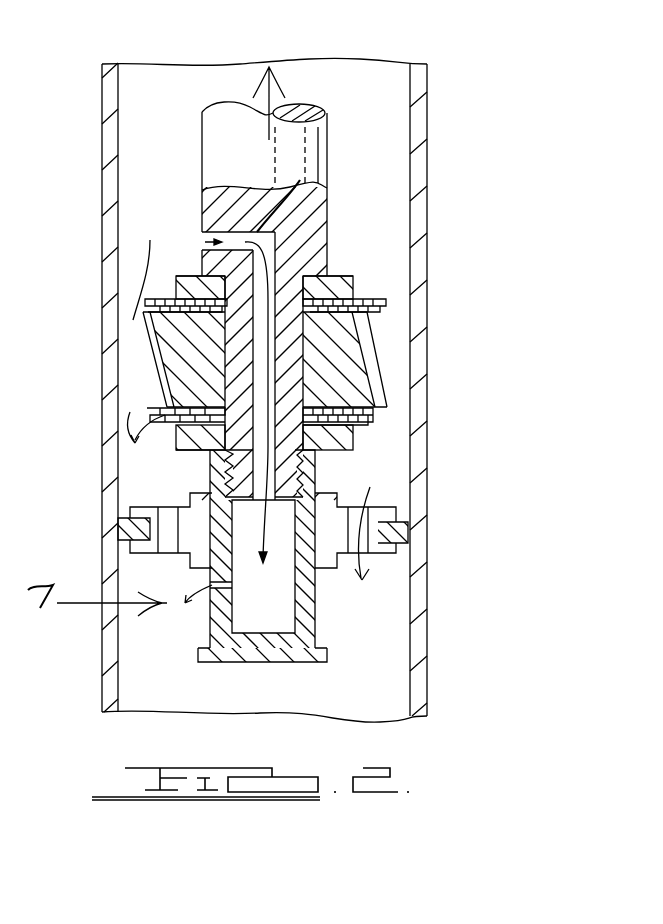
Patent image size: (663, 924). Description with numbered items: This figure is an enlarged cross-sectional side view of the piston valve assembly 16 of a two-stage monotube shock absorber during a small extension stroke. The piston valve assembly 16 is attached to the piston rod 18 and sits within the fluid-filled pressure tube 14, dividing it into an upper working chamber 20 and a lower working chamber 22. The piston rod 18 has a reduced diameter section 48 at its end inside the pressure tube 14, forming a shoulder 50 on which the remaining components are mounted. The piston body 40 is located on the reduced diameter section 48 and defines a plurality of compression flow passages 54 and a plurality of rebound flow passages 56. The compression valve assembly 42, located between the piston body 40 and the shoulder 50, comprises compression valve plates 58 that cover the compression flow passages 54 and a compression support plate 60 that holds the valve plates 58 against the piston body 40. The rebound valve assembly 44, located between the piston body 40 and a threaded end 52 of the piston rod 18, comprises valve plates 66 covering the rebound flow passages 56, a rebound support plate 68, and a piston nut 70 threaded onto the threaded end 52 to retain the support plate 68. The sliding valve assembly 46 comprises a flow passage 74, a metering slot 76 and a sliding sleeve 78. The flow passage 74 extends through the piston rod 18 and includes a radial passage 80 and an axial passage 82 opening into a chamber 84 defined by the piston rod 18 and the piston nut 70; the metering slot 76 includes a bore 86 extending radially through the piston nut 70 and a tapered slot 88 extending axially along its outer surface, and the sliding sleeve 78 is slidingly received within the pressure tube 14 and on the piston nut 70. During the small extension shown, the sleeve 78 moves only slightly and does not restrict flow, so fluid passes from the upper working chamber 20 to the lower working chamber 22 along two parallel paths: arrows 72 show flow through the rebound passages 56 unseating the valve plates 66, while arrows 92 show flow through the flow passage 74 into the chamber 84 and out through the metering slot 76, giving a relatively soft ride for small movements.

The pressure tube 14 is at (426, 112).
The piston valve assembly 16 is at (362, 84).
The piston rod 18 is at (213, 171).
The upper working chamber 20 is at (134, 120).
The lower working chamber 22 is at (249, 709).
The piston body 40 is at (133, 380).
The compression valve assembly 42 is at (167, 287).
The rebound valve assembly 44 is at (153, 483).
The sliding valve assembly 46 is at (160, 655).
The reduced diameter section 48 is at (286, 310).
The shoulder 50 is at (200, 270).
The threaded end 52 is at (287, 475).
The compression flow passages 54 is at (370, 352).
The rebound flow passages 56 is at (133, 345).
The compression valve plates 58 is at (345, 290).
The compression support plate 60 is at (388, 300).
The valve plates 66 is at (372, 420).
The rebound support plate 68 is at (347, 443).
The piston nut 70 is at (303, 658).
The arrows 72 is at (140, 287).
The flow passage 74 is at (250, 442).
The metering slot 76 is at (182, 567).
The sliding sleeve 78 is at (382, 548).
The radial passage 80 is at (289, 193).
The axial passage 82 is at (267, 367).
The chamber 84 is at (275, 628).
The bore 86 is at (190, 597).
The tapered slot 88 is at (218, 603).
The arrows 92 is at (205, 242).